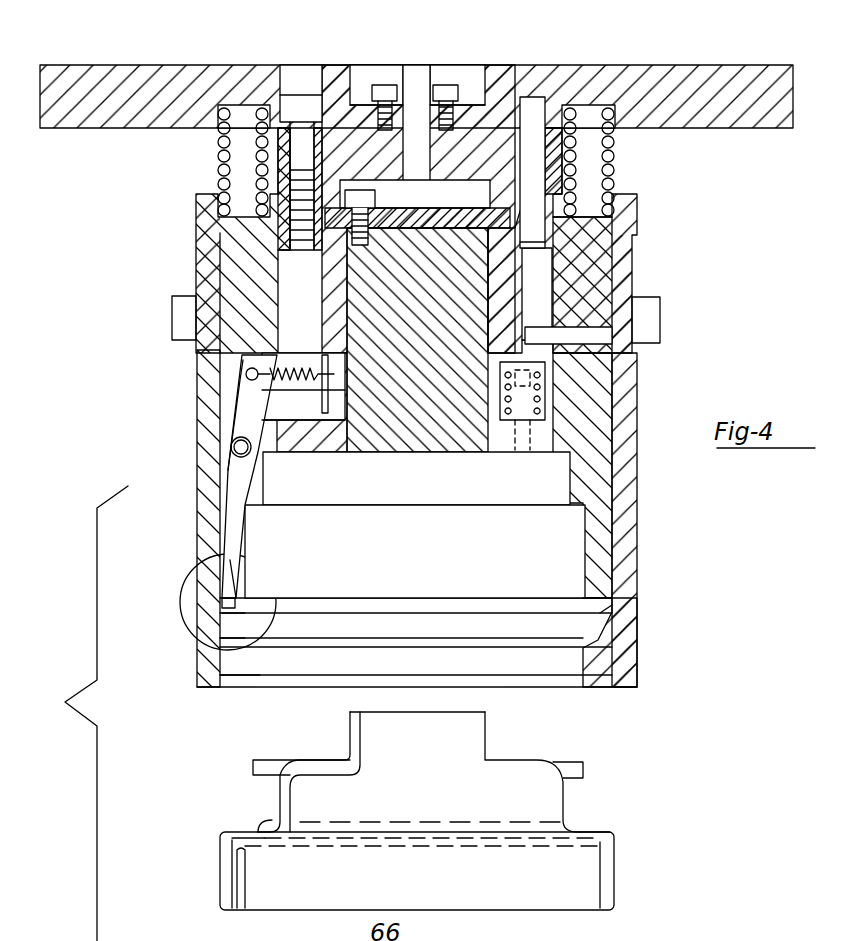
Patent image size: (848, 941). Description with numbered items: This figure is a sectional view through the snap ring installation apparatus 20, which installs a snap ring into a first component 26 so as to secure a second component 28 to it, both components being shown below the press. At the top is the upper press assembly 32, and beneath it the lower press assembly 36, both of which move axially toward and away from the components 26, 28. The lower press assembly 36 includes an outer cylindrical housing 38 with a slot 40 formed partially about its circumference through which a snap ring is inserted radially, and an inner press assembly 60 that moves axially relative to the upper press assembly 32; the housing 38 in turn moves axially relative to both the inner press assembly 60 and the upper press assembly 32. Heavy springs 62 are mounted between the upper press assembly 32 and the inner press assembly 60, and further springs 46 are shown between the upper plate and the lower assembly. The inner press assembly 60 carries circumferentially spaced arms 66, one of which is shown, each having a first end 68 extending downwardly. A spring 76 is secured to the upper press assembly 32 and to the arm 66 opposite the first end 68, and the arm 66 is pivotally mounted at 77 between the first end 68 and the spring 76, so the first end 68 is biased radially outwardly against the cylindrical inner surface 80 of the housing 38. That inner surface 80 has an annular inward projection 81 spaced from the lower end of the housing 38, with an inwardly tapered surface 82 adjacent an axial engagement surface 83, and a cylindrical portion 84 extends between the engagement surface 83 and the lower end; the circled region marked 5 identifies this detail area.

The snap ring installation apparatus 20 is at (99, 50).
The upper press assembly 32 is at (192, 64).
The compression springs 46 is at (218, 165).
The lower press assembly 36 is at (196, 254).
The inner press assembly 60 is at (276, 318).
The outer cylindrical housing 38 is at (194, 388).
The heavy springs 62 is at (548, 386).
The arms 66 is at (226, 446).
The pivot 77 is at (247, 448).
The spring 76 is at (360, 420).
The inner surface 80 is at (242, 490).
The first end 68 is at (245, 598).
The inwardly tapered surface 82 is at (262, 598).
The annular inward projection 81 is at (228, 650).
The engagement surface 83 is at (240, 650).
The cylindrical portion 84 is at (222, 690).
The slot 40 is at (632, 606).
The second component 28 is at (275, 797).
The first component 26 is at (216, 860).
The detail circle 5 is at (223, 602).